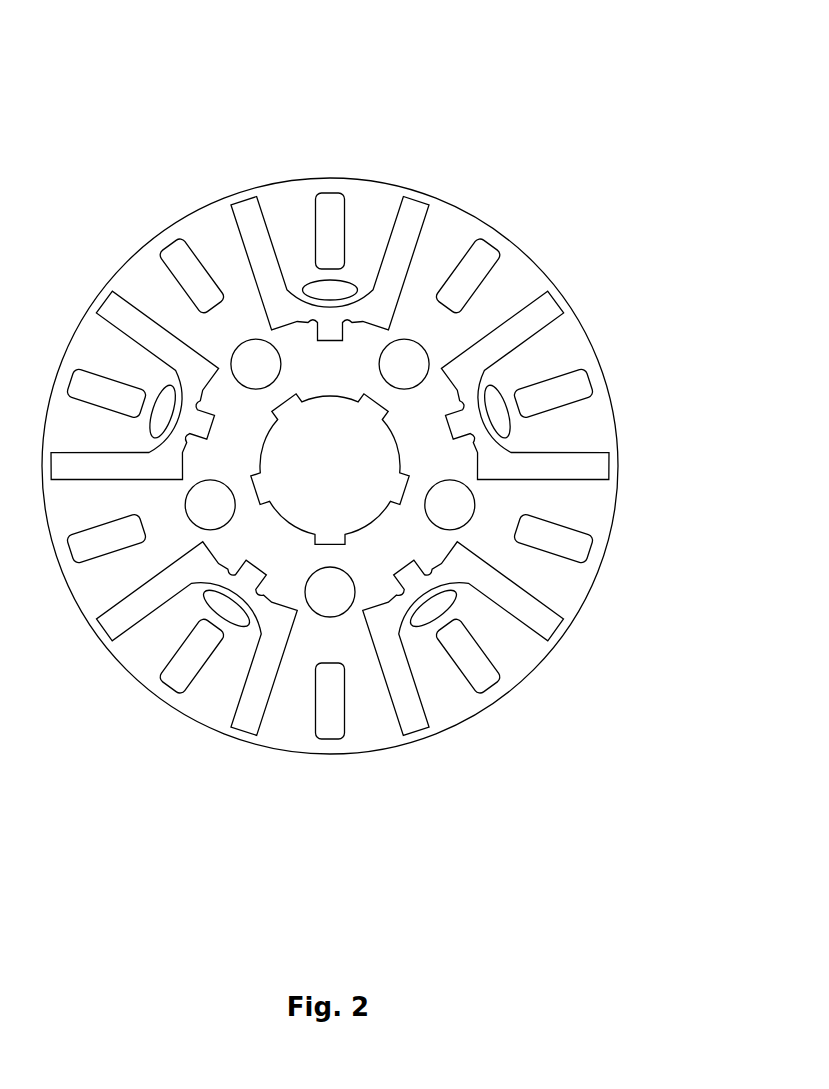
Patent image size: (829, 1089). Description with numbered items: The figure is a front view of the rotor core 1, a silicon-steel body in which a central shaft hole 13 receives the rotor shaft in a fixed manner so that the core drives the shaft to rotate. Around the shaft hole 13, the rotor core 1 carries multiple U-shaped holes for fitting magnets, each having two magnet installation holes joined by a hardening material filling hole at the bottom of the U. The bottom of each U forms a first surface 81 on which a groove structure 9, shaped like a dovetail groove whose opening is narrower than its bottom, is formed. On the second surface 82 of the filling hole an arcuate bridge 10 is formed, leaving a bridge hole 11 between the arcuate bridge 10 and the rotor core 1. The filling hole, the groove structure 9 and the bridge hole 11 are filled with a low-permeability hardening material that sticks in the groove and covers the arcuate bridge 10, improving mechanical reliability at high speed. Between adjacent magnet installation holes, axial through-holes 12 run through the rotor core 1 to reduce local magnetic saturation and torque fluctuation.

The rotor core 1 is at (645, 427).
The groove structure 9 is at (330, 332).
The arcuate bridge 10 is at (347, 302).
The bridge hole 11 is at (331, 290).
The through-hole 12 is at (188, 665).
The shaft hole 13 is at (357, 492).
The first surface 81 is at (369, 320).
The second surface 82 is at (312, 282).